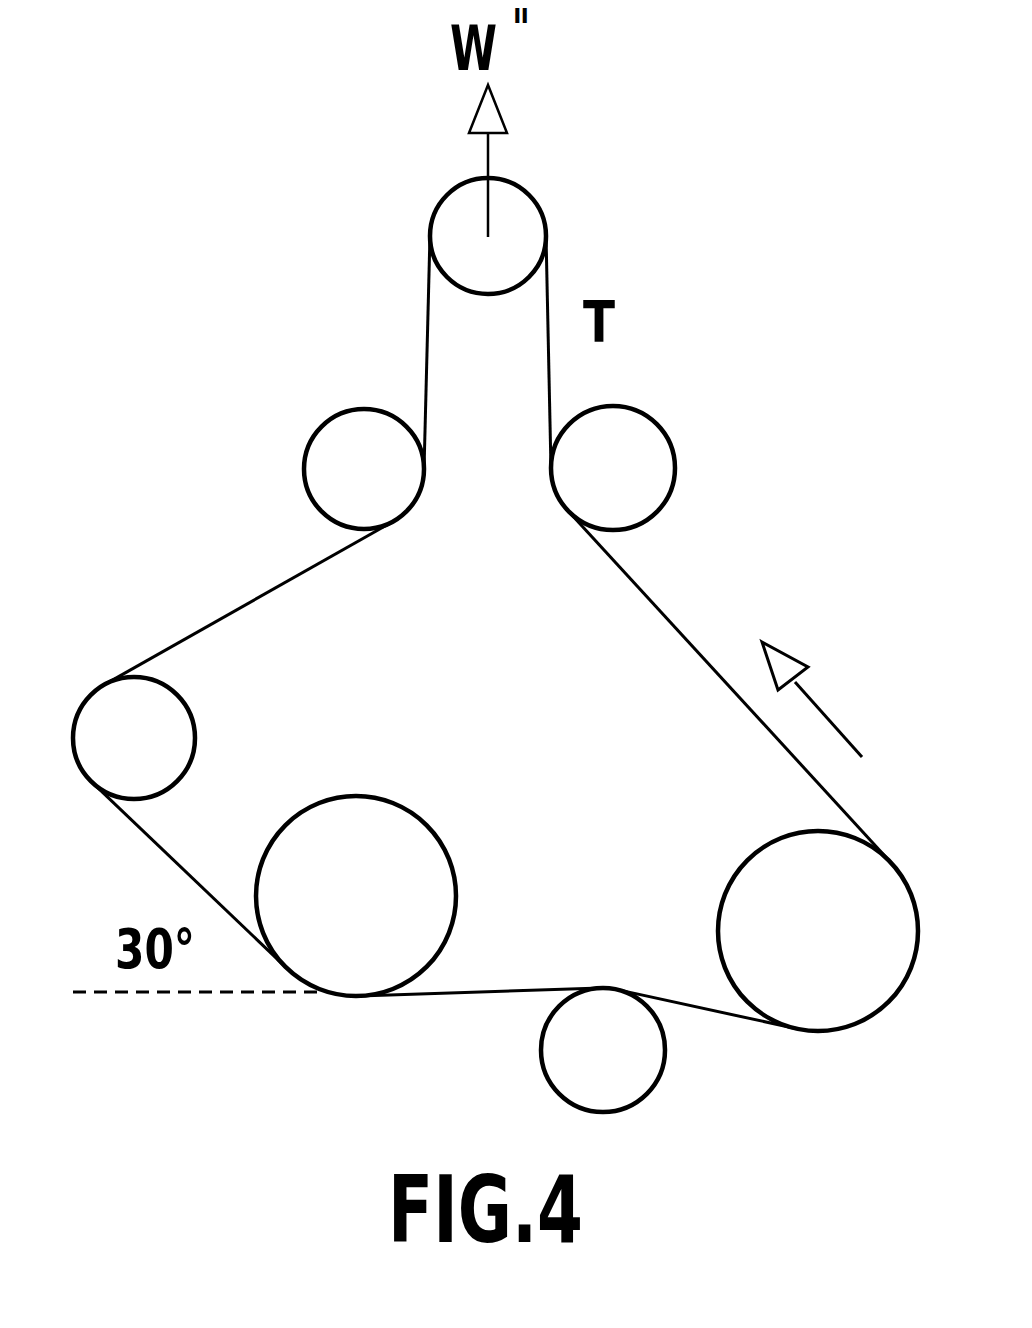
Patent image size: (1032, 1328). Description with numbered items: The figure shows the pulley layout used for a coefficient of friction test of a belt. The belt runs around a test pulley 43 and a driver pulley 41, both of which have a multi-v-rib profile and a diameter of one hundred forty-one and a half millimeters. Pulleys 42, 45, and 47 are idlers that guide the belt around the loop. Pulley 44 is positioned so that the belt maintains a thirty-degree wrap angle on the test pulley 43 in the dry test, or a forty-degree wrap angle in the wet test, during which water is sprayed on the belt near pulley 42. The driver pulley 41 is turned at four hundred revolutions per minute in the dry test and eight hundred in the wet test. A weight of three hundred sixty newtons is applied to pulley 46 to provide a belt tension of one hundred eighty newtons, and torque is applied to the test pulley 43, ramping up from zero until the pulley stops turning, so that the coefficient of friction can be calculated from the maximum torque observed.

The driver pulley 41 is at (848, 957).
The idler pulley 42 is at (636, 1077).
The test pulley 43 is at (385, 923).
The pulley 44 is at (162, 758).
The idler pulley 45 is at (393, 490).
The pulley 46 is at (465, 237).
The idler pulley 47 is at (642, 490).